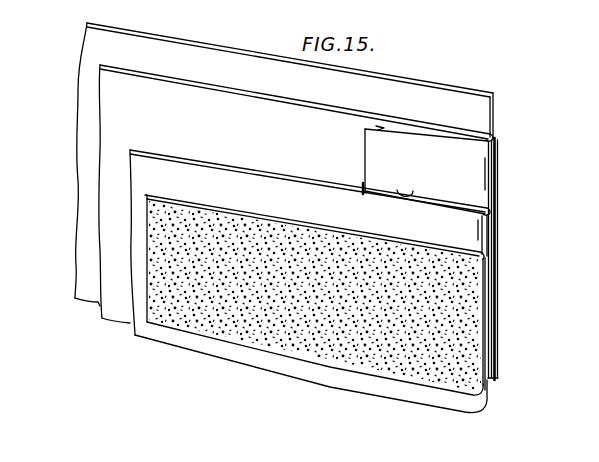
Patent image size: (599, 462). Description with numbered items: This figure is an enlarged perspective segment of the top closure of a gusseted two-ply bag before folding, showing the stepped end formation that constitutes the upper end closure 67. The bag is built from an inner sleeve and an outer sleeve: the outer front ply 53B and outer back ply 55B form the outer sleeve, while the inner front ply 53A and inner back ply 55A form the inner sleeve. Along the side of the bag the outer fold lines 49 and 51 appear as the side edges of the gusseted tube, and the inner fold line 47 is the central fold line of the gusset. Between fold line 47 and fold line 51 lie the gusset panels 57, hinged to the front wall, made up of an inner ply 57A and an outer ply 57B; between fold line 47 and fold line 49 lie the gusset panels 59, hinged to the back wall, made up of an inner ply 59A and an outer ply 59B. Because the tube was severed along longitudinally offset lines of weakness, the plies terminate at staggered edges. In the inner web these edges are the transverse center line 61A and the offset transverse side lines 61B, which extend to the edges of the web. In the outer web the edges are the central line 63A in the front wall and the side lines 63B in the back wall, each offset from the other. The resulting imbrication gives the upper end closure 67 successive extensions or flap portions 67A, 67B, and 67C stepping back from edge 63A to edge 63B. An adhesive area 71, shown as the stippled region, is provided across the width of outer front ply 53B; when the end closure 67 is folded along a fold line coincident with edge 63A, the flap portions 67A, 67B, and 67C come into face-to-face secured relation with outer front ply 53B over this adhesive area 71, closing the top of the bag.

The inner fold lines 47 is at (365, 180).
The outer fold lines 49 is at (498, 173).
The outer fold lines 51 is at (490, 275).
The inner front ply 53A is at (128, 167).
The outer front ply 53B is at (143, 302).
The inner back ply 55A is at (97, 98).
The outer back ply 55B is at (79, 40).
The gusset panels 57 is at (463, 193).
The inner ply of gusset panel 57A is at (400, 190).
The outer ply of gusset panel 57B is at (437, 198).
The gusset panels 59 is at (468, 157).
The inner ply of gusset panel 59A is at (380, 127).
The outer ply of gusset panel 59B is at (418, 140).
The transverse center line 61A is at (313, 182).
The transverse side line 61B is at (345, 110).
The central line 63A is at (300, 222).
The side lines 63B is at (437, 80).
The upper end closure 67 is at (497, 107).
The flap portion 67A is at (254, 203).
The flap portion 67B is at (267, 138).
The flap portion 67C is at (291, 87).
The adhesive area 71 is at (460, 320).